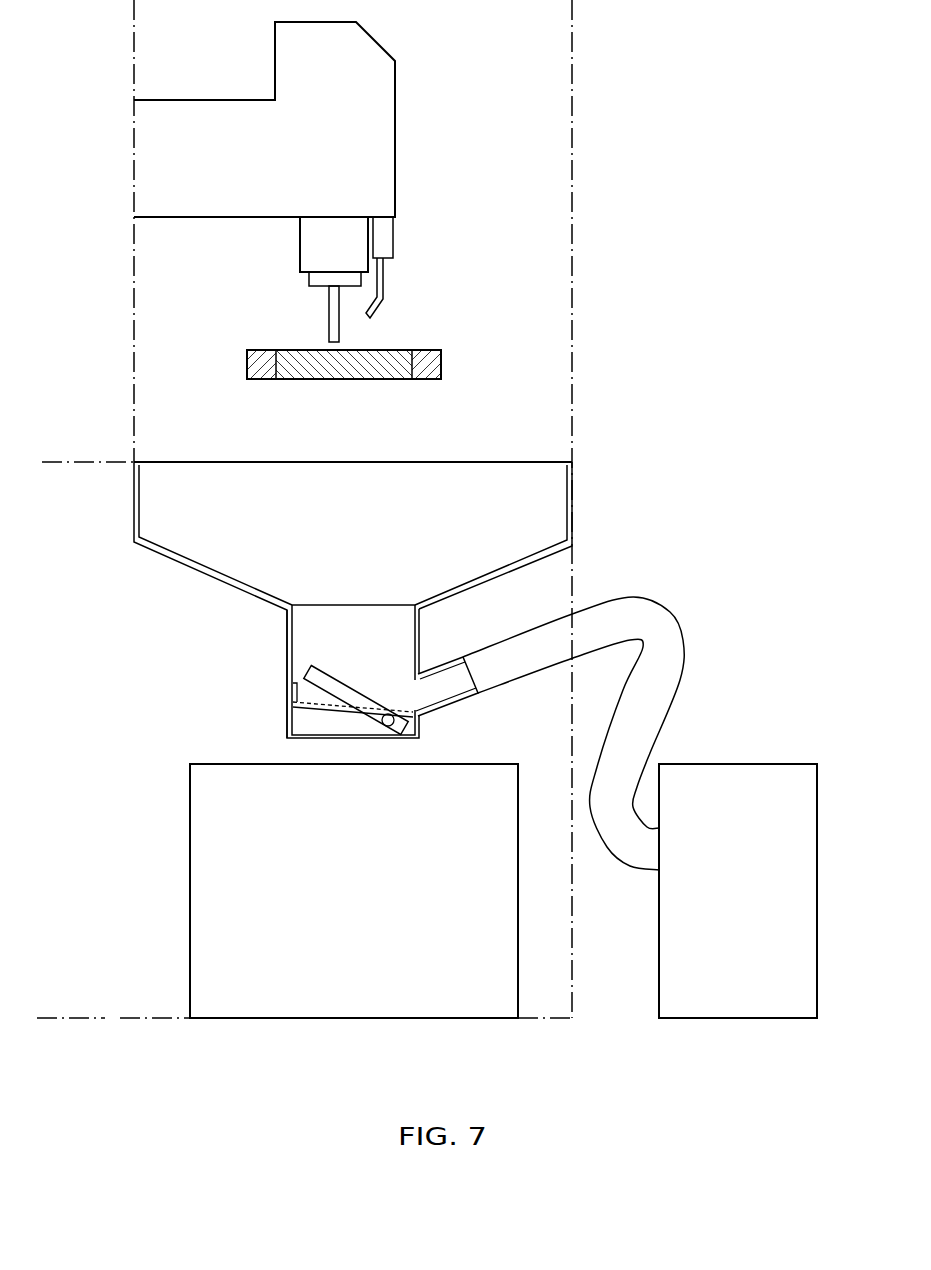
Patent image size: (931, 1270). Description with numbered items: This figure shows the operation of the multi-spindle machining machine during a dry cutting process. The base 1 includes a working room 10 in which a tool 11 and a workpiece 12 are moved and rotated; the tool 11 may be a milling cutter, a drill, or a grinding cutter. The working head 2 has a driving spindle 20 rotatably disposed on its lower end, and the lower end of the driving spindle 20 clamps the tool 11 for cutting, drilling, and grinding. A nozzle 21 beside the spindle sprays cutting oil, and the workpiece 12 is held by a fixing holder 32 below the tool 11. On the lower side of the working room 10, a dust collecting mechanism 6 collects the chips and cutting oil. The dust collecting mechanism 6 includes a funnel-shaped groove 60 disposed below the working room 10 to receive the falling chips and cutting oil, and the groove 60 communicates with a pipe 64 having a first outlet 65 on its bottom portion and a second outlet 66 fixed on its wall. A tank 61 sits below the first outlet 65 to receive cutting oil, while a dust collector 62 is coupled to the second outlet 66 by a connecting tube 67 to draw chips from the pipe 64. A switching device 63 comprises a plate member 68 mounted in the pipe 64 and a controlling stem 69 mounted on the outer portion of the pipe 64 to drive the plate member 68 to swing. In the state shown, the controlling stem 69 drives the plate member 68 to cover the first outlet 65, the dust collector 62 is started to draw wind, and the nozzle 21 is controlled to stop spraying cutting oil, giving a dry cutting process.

The base 1 is at (118, 998).
The working head 2 is at (380, 133).
The dust collecting mechanism 6 is at (731, 607).
The working room 10 is at (530, 195).
The tool 11 is at (333, 318).
The workpiece 12 is at (327, 372).
The driving spindle 20 is at (310, 245).
The nozzle 21 is at (383, 288).
The fixing holder 32 is at (442, 360).
The groove 60 is at (570, 507).
The tank 61 is at (206, 876).
The dust collector 62 is at (676, 951).
The switching device 63 is at (190, 650).
The pipe 64 is at (417, 640).
The first outlet 65 is at (336, 735).
The second outlet 66 is at (420, 692).
The connecting tube 67 is at (663, 687).
The plate member 68 is at (296, 710).
The controlling stem 69 is at (308, 674).